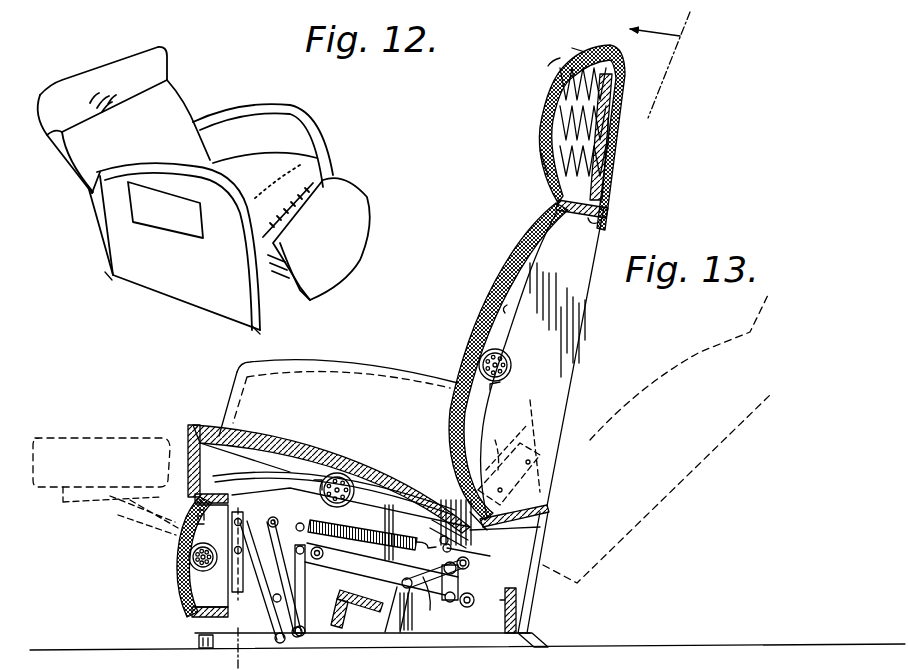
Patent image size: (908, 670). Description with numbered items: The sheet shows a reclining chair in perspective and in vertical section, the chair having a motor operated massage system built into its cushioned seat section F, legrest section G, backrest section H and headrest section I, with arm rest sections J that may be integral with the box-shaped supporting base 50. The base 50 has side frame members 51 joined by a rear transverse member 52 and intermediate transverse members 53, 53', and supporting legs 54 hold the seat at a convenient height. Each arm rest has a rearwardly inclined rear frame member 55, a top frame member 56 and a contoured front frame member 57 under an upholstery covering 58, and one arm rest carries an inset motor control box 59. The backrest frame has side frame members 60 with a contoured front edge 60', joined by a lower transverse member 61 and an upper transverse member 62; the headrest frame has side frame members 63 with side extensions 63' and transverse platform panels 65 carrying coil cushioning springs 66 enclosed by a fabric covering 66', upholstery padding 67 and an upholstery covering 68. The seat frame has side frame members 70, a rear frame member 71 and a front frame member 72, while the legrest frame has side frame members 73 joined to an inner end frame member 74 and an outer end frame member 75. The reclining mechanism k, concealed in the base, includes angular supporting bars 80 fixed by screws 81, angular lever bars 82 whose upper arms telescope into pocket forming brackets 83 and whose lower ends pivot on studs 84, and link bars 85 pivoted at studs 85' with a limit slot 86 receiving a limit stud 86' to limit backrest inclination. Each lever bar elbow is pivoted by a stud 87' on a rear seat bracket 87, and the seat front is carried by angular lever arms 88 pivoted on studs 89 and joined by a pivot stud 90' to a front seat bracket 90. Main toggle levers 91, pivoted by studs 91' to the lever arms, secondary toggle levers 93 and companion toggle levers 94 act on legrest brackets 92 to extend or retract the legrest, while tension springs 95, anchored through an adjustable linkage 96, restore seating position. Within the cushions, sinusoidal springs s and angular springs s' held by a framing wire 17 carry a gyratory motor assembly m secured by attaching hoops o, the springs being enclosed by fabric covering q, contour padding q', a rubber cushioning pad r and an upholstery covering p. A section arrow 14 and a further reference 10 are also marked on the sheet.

In FIG. 12, the headrest section I is at (162, 50).
In FIG. 13, the headrest section I is at (498, 100).
In FIG. 12, the backrest section H is at (180, 92).
In FIG. 13, the backrest section H is at (702, 350).
In FIG. 12, the arm rest sections J is at (282, 106).
In FIG. 13, the arm rest sections J is at (372, 356).
In FIG. 12, the cushioned seat section F is at (302, 154).
In FIG. 13, the cushioned seat section F is at (194, 422).
In FIG. 12, the cushioned legrest section G is at (348, 215).
In FIG. 13, the cushioned legrest section G is at (78, 430).
In FIG. 12, the motor control box 59 is at (163, 222).
In FIG. 12, the supporting legs 54 is at (108, 275).
In FIG. 13, the supporting legs 54 is at (540, 644).
In FIG. 13, the section line 14 is at (669, 65).
In FIG. 13, the fabric covering 66' is at (559, 32).
In FIG. 13, the upholstery padding 67 is at (555, 70).
In FIG. 13, the coil cushioning springs 66 is at (577, 122).
In FIG. 13, the transverse platform panels 65 is at (612, 145).
In FIG. 13, the upholstery covering 68 is at (542, 162).
In FIG. 13, the side frame members 63 is at (620, 137).
In FIG. 13, the transverse frame member 62 is at (604, 220).
In FIG. 13, the side frame members 60 is at (576, 356).
In FIG. 13, the contoured front edge 60' is at (518, 364).
In FIG. 13, the transverse frame member 61 is at (549, 512).
In FIG. 13, the pocket forming bracket 83 is at (509, 464).
In FIG. 13, the rear frame member 55 is at (540, 553).
In FIG. 13, the side frame members 51 is at (520, 603).
In FIG. 13, the rear transverse member 52 is at (526, 622).
In FIG. 13, the supporting base 50 is at (400, 636).
In FIG. 13, the upholstery covering 58 is at (345, 365).
In FIG. 13, the front frame member 57 is at (240, 370).
In FIG. 13, the top frame member 56 is at (415, 374).
In FIG. 13, the framing wire 17 is at (193, 432).
In FIG. 13, the front seat bracket 90 is at (335, 485).
In FIG. 13, the pivot stud 90' is at (266, 497).
In FIG. 13, the pivot studs 89 is at (280, 512).
In FIG. 13, the adjustable linkage 96 is at (301, 522).
In FIG. 13, the angular lever arms 88 is at (255, 552).
In FIG. 13, the gyratory motor assembly m is at (512, 358).
In FIG. 13, the motor attaching hoops o is at (512, 378).
In FIG. 13, the sinusoidal springs s is at (356, 413).
In FIG. 13, the angular shaped sinusoidal springs s' is at (240, 415).
In FIG. 13, the upholstery covering p is at (550, 222).
In FIG. 13, the rubber cushioning pad r is at (500, 265).
In FIG. 13, the fabric covering q is at (314, 444).
In FIG. 13, the contour padding q' is at (309, 466).
In FIG. 13, the side frame members 70 is at (404, 490).
In FIG. 13, the legrest bracket 92 is at (128, 550).
In FIG. 13, the main toggle lever 91 is at (167, 558).
In FIG. 13, the toggle lever 93 is at (120, 526).
In FIG. 13, the front frame member 72 is at (196, 494).
In FIG. 13, the inner end frame member 74 is at (195, 510).
In FIG. 13, the side frame members 73 is at (192, 542).
In FIG. 13, the outer end frame member 75 is at (192, 632).
In FIG. 13, the tension springs 95 is at (378, 553).
In FIG. 13, the angular supporting bars 80 is at (362, 548).
In FIG. 13, the companion toggle lever 94 is at (330, 530).
In FIG. 13, the pivot stud 91' is at (275, 595).
In FIG. 13, the mechanism 10 is at (280, 595).
In FIG. 13, the reclining mechanism k is at (318, 622).
In FIG. 13, the intermediate transverse member 53 is at (354, 602).
In FIG. 13, the intermediate transverse member 53' is at (353, 616).
In FIG. 13, the securing bolts or screws 81 is at (320, 560).
In FIG. 13, the angular lever bars 82 is at (458, 585).
In FIG. 13, the limit slot 86 is at (482, 565).
In FIG. 13, the limit stud 86' is at (418, 581).
In FIG. 13, the bracket 87 is at (449, 525).
In FIG. 13, the pivot stud 87' is at (490, 565).
In FIG. 13, the link bars 85 is at (428, 566).
In FIG. 13, the pivot stud 85' is at (396, 655).
In FIG. 13, the pivot studs 84 is at (450, 635).
In FIG. 13, the rear frame member 71 is at (478, 535).
In FIG. 13, the side extensions 63' is at (599, 663).